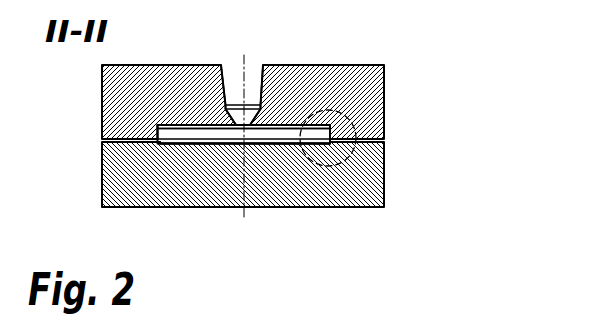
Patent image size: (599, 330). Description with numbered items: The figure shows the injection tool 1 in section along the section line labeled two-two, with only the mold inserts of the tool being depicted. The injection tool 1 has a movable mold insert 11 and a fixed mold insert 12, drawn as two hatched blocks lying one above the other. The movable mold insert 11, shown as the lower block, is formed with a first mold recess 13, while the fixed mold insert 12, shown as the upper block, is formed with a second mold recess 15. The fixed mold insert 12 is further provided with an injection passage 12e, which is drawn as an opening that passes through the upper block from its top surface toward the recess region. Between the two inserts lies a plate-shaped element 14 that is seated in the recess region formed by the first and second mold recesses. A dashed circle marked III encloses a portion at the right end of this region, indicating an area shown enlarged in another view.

The injection tool 1 is at (452, 78).
The movable mold insert 11 is at (108, 174).
The fixed mold insert 12 is at (110, 98).
The injection passage 12e is at (257, 63).
The first mold recess 13 is at (205, 145).
The plate member / substrate in cavity 14 is at (176, 133).
The second mold recess 15 is at (285, 128).
The enlarged detail region III is at (350, 153).